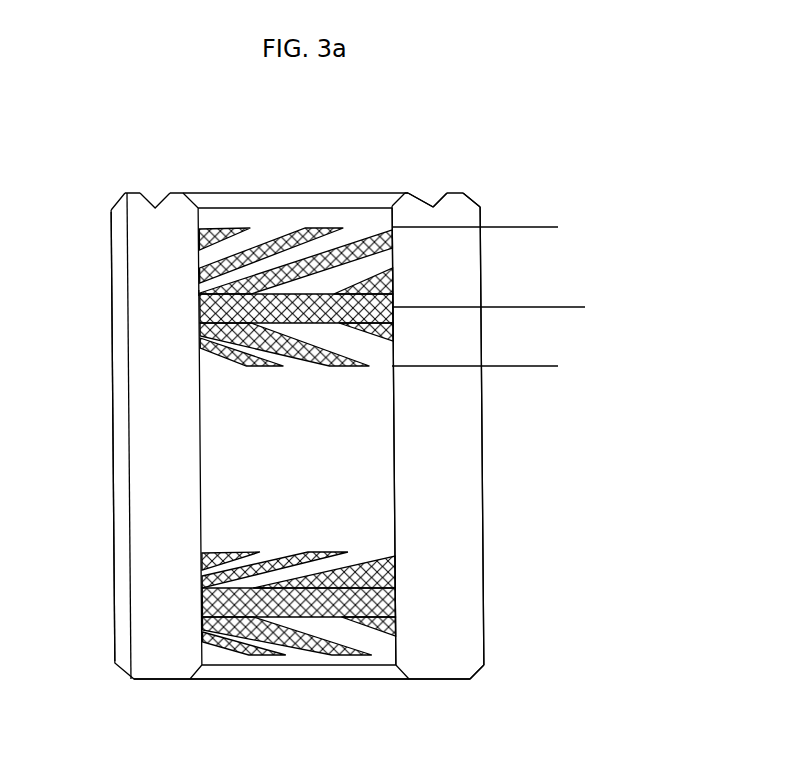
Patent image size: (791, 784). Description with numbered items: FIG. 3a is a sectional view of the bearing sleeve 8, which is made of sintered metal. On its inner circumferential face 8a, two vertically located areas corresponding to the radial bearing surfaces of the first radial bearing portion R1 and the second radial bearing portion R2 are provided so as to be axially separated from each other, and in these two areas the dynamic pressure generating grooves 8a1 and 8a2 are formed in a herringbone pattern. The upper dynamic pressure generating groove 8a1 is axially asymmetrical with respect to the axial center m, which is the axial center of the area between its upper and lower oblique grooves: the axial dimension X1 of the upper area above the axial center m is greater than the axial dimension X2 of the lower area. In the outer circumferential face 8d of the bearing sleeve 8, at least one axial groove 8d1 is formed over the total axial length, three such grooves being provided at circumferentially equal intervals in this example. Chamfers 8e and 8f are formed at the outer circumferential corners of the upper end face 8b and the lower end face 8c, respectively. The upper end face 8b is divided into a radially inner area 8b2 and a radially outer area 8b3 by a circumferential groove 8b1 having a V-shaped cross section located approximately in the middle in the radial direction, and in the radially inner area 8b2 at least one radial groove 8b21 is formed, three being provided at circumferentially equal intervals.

The bearing sleeve 8 is at (109, 187).
The inner circumferential face 8a is at (396, 436).
The dynamic pressure generating groove 8a1 is at (250, 236).
The dynamic pressure generating groove 8a2 is at (262, 557).
The upper end face 8b is at (173, 187).
The circumferential groove 8b1 is at (435, 205).
The radially inner area 8b2 is at (412, 203).
The radial groove 8b21 is at (405, 196).
The radially outer area 8b3 is at (457, 192).
The lower end face 8c is at (166, 684).
The outer circumferential face 8d is at (112, 401).
The axial groove 8d1 is at (130, 482).
The chamfer 8e is at (470, 197).
The chamfer 8f is at (480, 670).
The first radial bearing portion R1 is at (195, 292).
The second radial bearing portion R2 is at (197, 608).
The axial dimension X1 is at (546, 229).
The axial dimension X2 is at (546, 309).
The axial center m is at (503, 304).